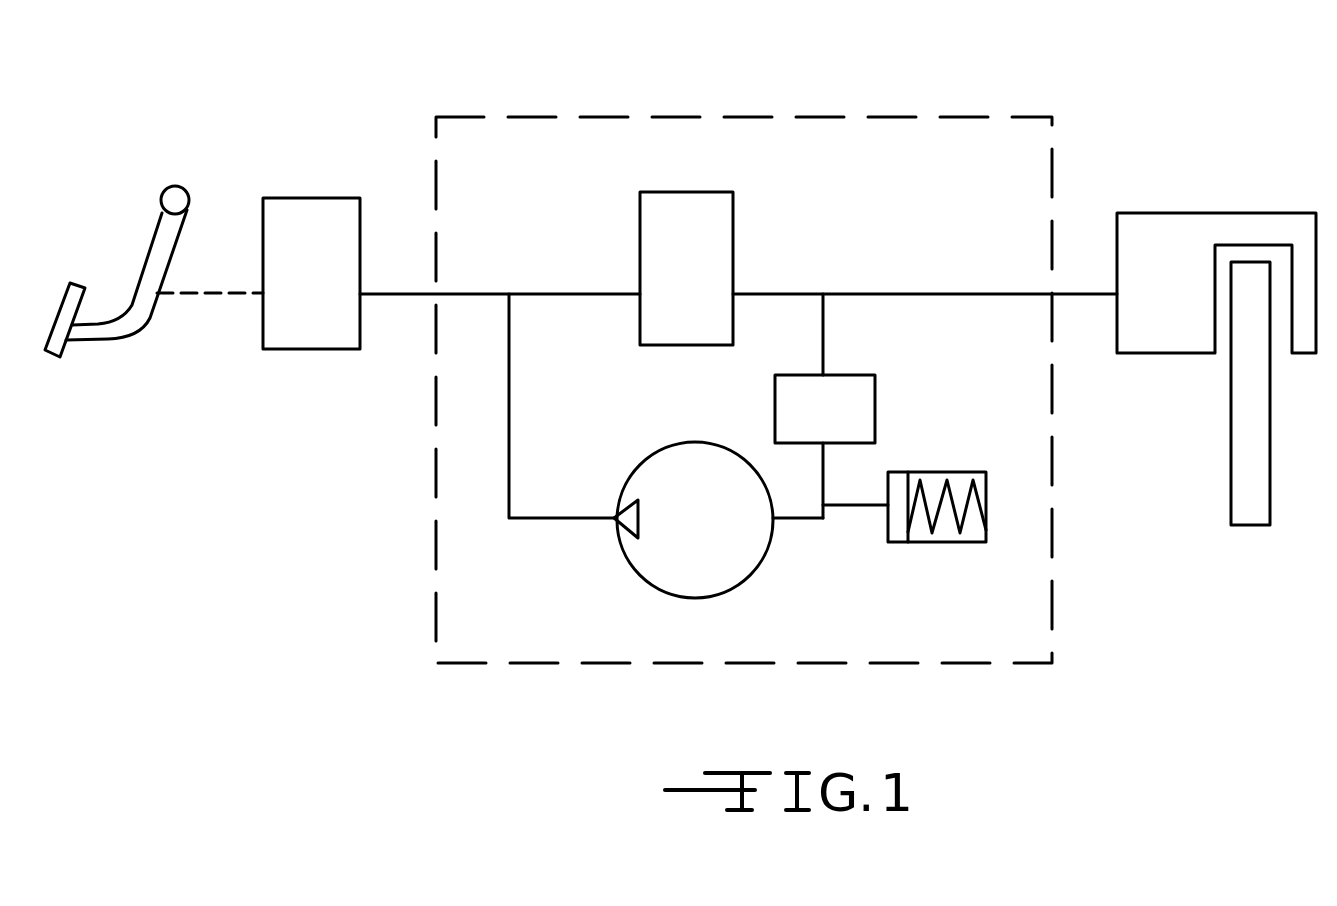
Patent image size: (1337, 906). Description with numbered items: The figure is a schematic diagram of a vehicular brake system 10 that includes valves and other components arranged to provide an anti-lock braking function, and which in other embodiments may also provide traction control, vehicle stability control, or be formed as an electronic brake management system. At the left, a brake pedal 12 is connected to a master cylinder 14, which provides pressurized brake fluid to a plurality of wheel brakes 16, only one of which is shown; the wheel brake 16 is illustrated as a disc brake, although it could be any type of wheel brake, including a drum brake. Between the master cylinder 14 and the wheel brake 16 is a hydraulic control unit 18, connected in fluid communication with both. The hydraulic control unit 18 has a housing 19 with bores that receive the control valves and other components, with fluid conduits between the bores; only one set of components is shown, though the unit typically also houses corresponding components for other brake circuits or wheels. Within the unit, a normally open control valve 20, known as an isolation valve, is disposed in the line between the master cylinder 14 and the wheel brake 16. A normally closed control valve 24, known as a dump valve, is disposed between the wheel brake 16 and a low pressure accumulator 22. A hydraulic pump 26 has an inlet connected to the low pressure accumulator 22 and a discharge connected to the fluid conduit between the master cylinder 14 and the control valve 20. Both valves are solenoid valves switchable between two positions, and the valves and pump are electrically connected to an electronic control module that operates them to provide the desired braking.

The brake system 10 is at (1004, 74).
The brake pedal 12 is at (70, 352).
The master cylinder 14 is at (291, 198).
The wheel brake 16 is at (1245, 213).
The hydraulic control unit 18 is at (512, 661).
The housing 19 is at (662, 147).
The normally open control valve 20 is at (733, 233).
The low pressure accumulator 22 is at (986, 522).
The normally closed control valve 24 is at (875, 405).
The hydraulic pump 26 is at (766, 556).